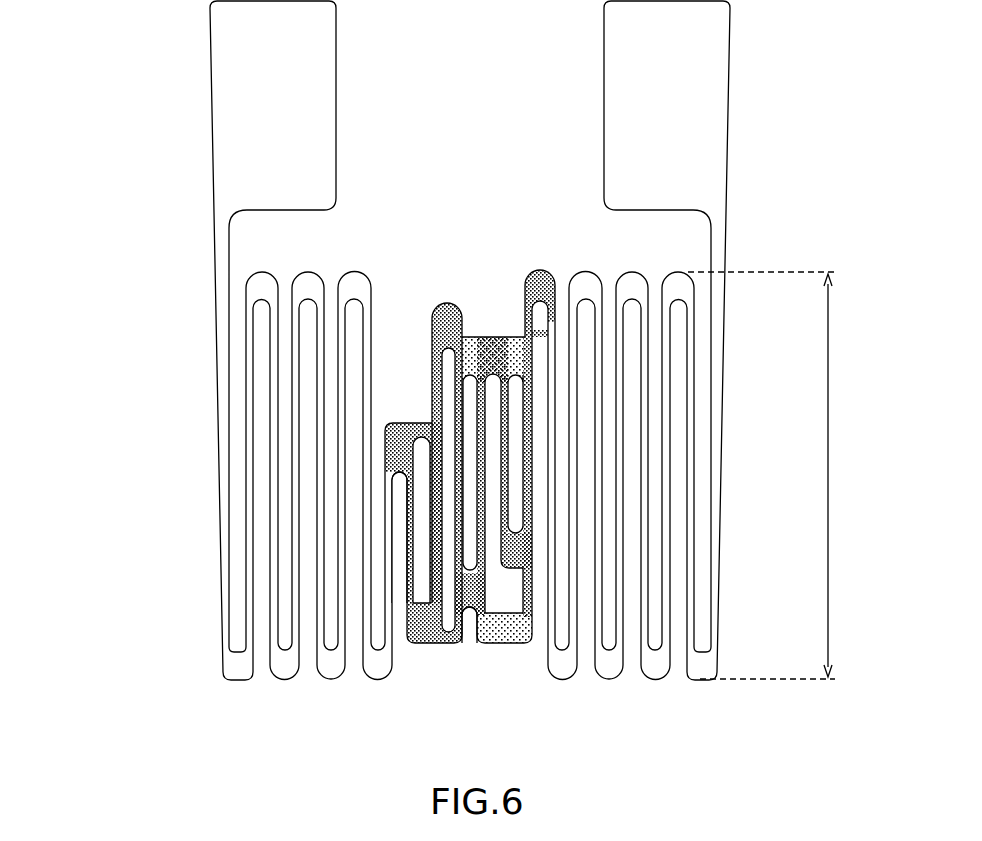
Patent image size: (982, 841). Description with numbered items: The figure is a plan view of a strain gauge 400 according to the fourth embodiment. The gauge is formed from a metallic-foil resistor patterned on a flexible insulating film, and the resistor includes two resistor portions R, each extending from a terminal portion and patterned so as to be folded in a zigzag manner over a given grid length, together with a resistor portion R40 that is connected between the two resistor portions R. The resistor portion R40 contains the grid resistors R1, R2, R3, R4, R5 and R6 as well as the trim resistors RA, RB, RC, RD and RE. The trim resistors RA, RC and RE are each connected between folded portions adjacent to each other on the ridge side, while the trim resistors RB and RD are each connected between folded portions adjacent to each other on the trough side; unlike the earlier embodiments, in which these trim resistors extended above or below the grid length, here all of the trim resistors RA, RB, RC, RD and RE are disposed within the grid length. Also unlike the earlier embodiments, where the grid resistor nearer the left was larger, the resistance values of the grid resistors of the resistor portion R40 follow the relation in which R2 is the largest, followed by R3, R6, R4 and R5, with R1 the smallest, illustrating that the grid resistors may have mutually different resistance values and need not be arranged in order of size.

The strain gauge 400 is at (176, 116).
The resistor portion R is at (392, 690).
The resistor portion R40 is at (553, 238).
The trim resistor RA is at (422, 425).
The trim resistor RB is at (446, 645).
The trim resistor RC is at (472, 337).
The trim resistor RD is at (502, 645).
The trim resistor RE is at (512, 337).
The grid resistor R1 is at (410, 577).
The grid resistor R2 is at (432, 547).
The grid resistor R3 is at (453, 511).
The grid resistor R4 is at (487, 490).
The grid resistor R5 is at (508, 463).
The grid resistor R6 is at (532, 427).